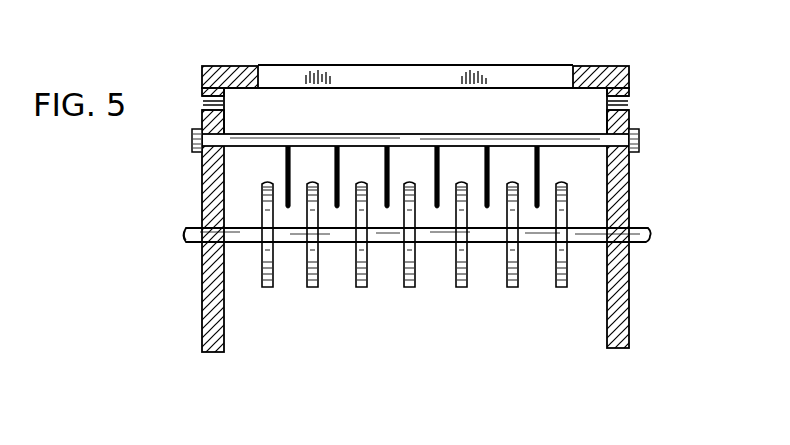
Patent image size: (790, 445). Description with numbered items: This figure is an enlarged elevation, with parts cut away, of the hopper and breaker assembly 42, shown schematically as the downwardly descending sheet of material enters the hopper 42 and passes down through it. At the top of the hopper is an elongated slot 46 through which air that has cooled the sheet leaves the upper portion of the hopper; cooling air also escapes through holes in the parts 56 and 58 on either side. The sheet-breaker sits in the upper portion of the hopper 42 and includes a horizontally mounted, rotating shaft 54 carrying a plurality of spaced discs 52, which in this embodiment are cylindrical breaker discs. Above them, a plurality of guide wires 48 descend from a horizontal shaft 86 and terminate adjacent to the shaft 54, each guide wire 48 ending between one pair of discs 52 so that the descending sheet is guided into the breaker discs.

The hopper and breaker assembly 42 is at (212, 317).
The elongated slot 46 is at (413, 73).
The guide wire 48 is at (285, 169).
The disc 52 is at (362, 288).
The shaft 54 is at (290, 238).
The part with holes 56 is at (212, 108).
The part with holes 58 is at (618, 103).
The horizontal shaft 86 is at (360, 139).